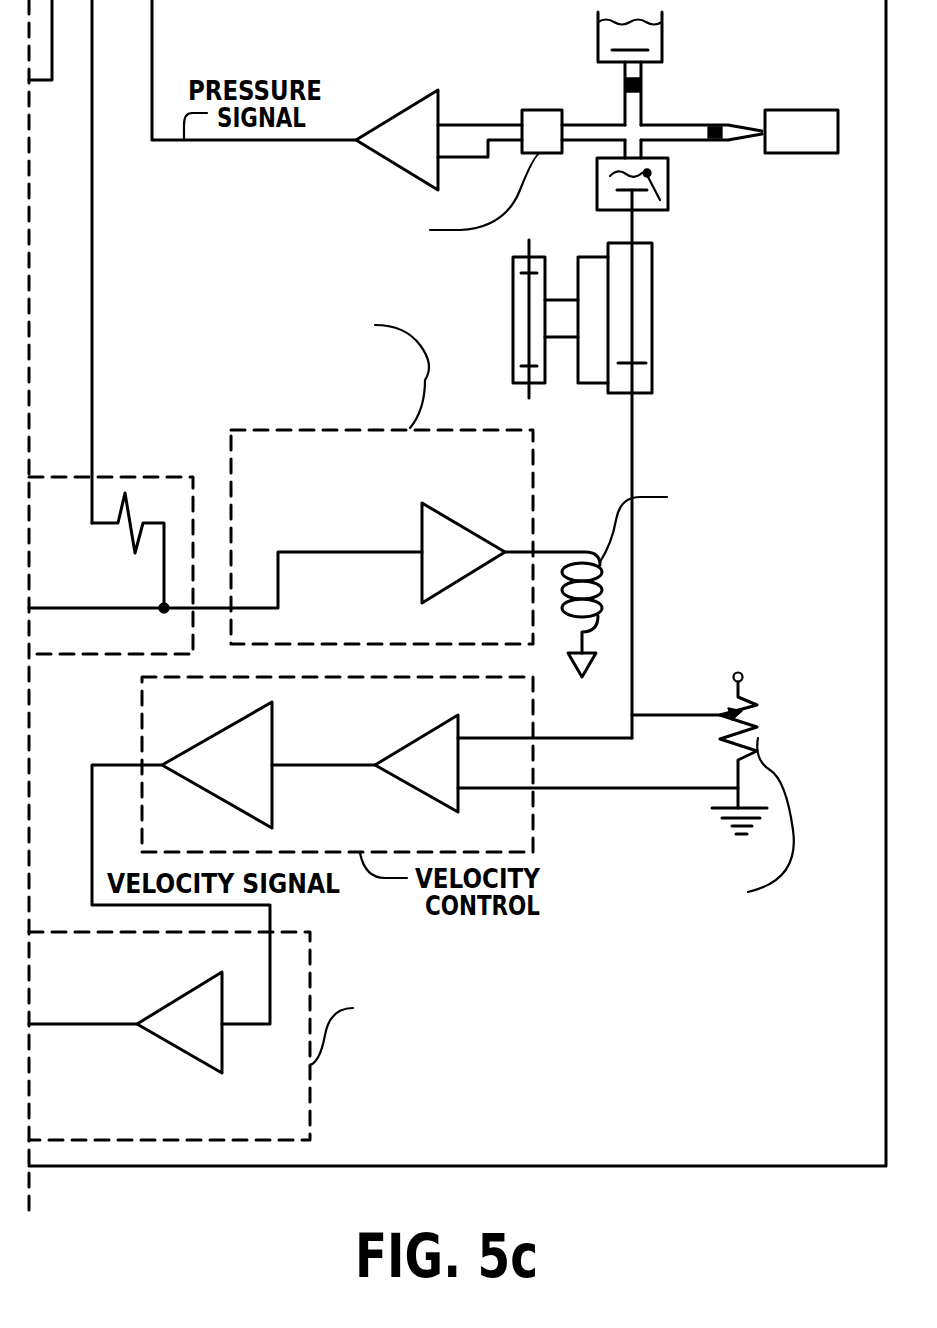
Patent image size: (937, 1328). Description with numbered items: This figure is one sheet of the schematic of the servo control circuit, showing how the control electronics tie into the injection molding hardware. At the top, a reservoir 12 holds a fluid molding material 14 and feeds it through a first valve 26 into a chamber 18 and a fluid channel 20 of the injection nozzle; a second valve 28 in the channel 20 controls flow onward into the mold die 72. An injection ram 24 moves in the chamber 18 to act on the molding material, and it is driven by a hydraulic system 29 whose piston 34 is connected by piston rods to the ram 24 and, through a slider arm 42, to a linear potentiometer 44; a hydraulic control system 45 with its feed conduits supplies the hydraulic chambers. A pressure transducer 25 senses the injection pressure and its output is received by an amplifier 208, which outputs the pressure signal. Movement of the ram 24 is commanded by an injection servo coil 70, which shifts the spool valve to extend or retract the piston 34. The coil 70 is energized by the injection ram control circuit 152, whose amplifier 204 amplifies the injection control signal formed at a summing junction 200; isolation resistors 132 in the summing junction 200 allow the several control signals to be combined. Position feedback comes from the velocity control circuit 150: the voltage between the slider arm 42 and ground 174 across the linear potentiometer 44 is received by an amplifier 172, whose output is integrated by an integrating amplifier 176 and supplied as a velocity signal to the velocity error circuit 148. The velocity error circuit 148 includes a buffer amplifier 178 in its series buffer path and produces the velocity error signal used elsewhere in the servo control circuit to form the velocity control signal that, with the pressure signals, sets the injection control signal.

The reservoir 12 is at (665, 42).
The fluid molding material 14 is at (630, 36).
The chamber 18 is at (668, 200).
The fluid channel 20 is at (592, 125).
The injection ram 24 is at (636, 193).
The pressure transducer 25 is at (515, 108).
The first valve 26 is at (642, 88).
The second valve 28 is at (718, 141).
The hydraulic system 29 is at (654, 337).
The piston 34 is at (638, 368).
The slider arm 42 is at (692, 712).
The linear potentiometer 44 is at (762, 703).
The hydraulic control system 45 is at (508, 303).
The injection servo coil 70 is at (603, 608).
The mold die 72 is at (808, 110).
The isolation resistors 132 is at (125, 492).
The velocity error circuit 148 is at (205, 1140).
The velocity control circuit 150 is at (535, 742).
The injection ram control circuit 152 is at (228, 500).
The amplifier 172 is at (430, 792).
The ground 174 is at (733, 826).
The integrating amplifier 176 is at (274, 744).
The buffer amplifier 178 is at (187, 1058).
The summing junction 200 is at (130, 656).
The amplifier 204 is at (443, 503).
The amplifier 208 is at (393, 108).